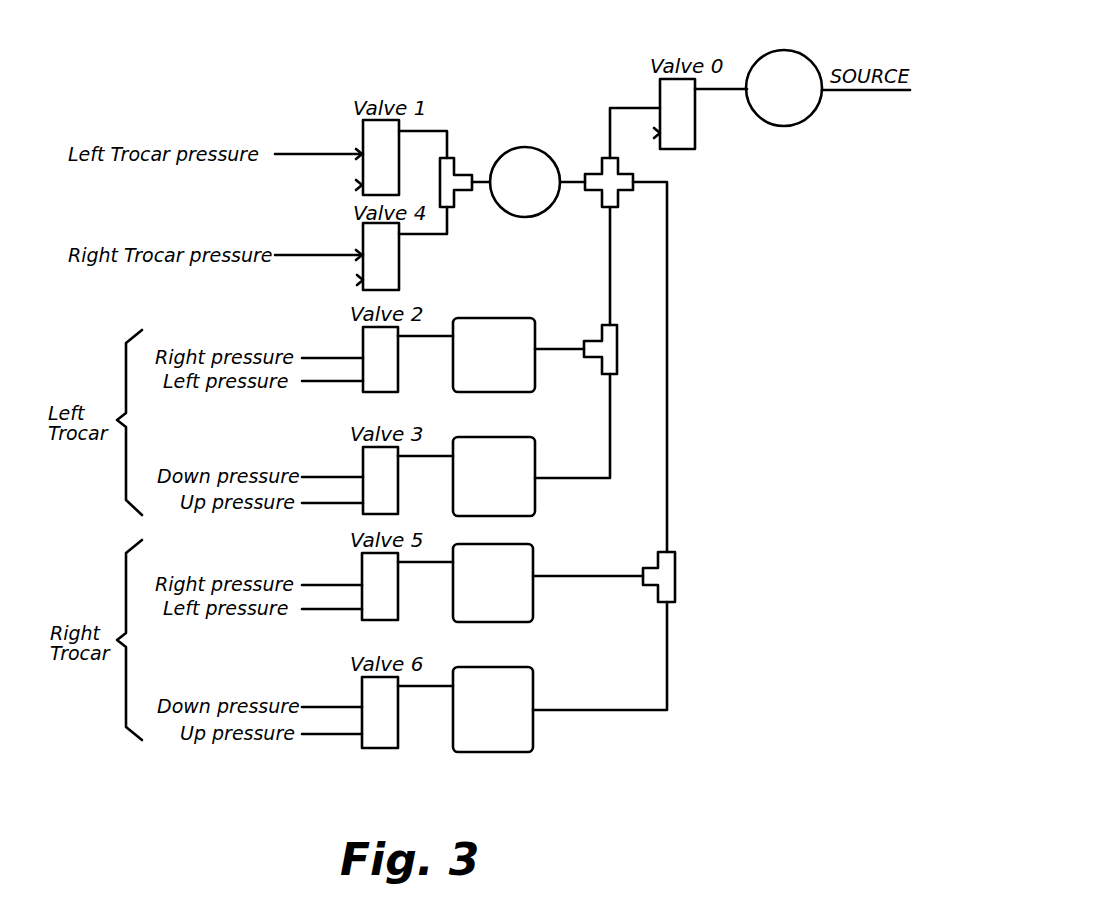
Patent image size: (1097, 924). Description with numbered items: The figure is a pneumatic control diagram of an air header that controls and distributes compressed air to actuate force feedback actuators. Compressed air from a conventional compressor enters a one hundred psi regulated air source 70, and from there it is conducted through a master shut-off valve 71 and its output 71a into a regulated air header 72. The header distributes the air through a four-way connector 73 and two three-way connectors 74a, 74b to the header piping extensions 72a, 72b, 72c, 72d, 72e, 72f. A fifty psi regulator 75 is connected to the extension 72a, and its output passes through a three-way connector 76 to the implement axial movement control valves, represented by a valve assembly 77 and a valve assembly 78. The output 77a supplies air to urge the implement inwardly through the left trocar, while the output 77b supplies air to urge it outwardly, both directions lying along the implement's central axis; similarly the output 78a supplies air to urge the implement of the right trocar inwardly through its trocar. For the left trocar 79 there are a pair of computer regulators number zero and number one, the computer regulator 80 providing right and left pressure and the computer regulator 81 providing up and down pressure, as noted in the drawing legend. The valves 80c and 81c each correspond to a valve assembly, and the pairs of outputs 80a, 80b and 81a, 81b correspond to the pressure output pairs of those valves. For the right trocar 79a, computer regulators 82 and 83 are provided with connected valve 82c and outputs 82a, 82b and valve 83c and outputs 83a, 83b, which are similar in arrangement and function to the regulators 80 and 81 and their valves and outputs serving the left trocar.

The regulated air source 70 is at (807, 58).
The master shut-off valve 71 is at (695, 133).
The output 71a is at (660, 108).
The regulated air header 72 is at (608, 113).
The header piping extension 72a is at (568, 180).
The header piping extension 72b is at (608, 273).
The header piping extension 72c is at (668, 248).
The header piping extension 72d is at (610, 422).
The header piping extension 72e is at (607, 575).
The header piping extension 72f is at (668, 650).
The 4-way connector 73 is at (627, 176).
The 3-way connector 74a is at (617, 346).
The 3-way connector 74b is at (677, 573).
The 50 psi regulator 75 is at (533, 215).
The 3-way connector 76 is at (455, 170).
The valve assembly 77 is at (396, 169).
The output 77a is at (363, 153).
The output 77b is at (358, 185).
The valve assembly 78 is at (399, 256).
The output 78a is at (363, 254).
The left trocar 79 is at (60, 400).
The right trocar 79a is at (77, 620).
The computer regulator 80 is at (505, 300).
The output 80a is at (343, 357).
The output 80b is at (337, 382).
The valve 80c is at (395, 374).
The computer regulator 81 is at (510, 420).
The output 81a is at (345, 476).
The output 81b is at (335, 504).
The valve 81c is at (395, 496).
The computer regulator 82 is at (523, 612).
The output 82a is at (345, 584).
The output 82b is at (338, 610).
The valve 82c is at (395, 600).
The computer regulator 83 is at (522, 672).
The output 83a is at (340, 706).
The output 83b is at (335, 735).
The valve 83c is at (395, 725).